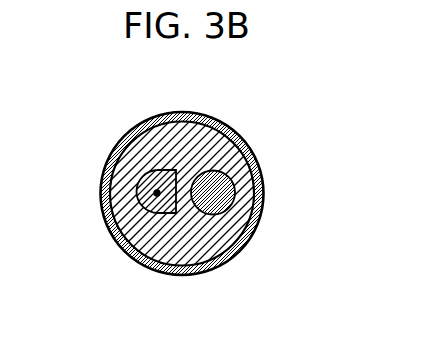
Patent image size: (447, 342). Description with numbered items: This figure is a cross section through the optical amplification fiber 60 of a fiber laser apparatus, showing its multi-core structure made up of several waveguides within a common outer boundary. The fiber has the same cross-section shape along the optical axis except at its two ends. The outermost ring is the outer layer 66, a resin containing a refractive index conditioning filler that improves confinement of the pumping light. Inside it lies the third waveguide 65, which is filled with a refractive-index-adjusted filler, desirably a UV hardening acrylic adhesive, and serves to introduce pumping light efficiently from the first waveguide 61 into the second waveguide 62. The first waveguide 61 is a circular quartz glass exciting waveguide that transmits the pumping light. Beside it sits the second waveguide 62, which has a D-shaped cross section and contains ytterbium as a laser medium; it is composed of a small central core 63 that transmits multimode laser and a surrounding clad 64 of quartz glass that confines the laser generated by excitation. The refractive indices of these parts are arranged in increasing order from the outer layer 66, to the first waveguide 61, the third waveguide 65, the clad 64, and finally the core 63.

The optical amplification fiber 60 is at (108, 245).
The first waveguide 61 is at (226, 191).
The second waveguide 62 is at (137, 190).
The core 63 is at (157, 193).
The clad 64 is at (139, 185).
The third waveguide 65 is at (248, 157).
The outer layer 66 is at (242, 250).